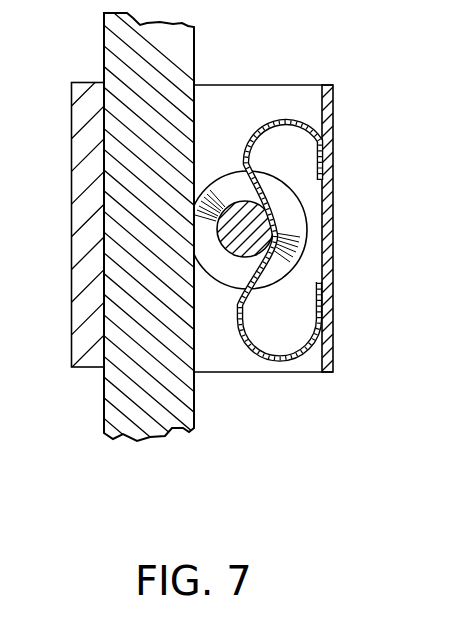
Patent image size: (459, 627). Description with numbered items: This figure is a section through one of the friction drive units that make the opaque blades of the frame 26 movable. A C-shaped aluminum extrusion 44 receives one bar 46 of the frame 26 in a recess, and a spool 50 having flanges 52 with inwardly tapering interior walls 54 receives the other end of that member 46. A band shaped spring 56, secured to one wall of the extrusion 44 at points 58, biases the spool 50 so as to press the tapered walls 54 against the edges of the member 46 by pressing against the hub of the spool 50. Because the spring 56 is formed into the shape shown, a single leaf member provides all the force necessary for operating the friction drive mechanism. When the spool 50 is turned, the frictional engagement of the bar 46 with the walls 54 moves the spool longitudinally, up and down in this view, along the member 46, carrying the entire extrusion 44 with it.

The frame 26 is at (104, 42).
The C-shaped aluminum extrusion 44 is at (71, 200).
The bar 46 is at (194, 58).
The spool 50 is at (222, 169).
The flanges 52 is at (294, 180).
The inwardly tapering interior walls 54 is at (281, 276).
The band shaped spring 56 is at (267, 101).
The points 58 is at (333, 167).